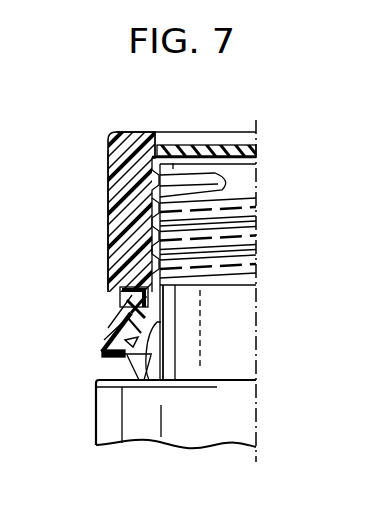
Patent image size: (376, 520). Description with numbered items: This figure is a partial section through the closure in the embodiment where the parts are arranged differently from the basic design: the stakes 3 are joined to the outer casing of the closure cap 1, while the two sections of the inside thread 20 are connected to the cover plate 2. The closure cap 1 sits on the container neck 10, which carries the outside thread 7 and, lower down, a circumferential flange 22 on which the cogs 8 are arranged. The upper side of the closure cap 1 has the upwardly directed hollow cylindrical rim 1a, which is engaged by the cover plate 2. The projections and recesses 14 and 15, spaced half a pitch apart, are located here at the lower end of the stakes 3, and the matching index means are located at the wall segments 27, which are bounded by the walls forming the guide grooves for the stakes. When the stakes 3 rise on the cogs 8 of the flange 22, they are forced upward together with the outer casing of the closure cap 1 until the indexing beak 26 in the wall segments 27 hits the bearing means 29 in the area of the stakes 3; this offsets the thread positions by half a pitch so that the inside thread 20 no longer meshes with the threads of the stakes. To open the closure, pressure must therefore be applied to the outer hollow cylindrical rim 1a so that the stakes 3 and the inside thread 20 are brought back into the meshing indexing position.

The closure cap 1 is at (108, 143).
The hollow cylindrical rim 1a is at (140, 142).
The cover plate 2 is at (228, 144).
The stakes 3 is at (125, 229).
The outside thread 7 is at (245, 230).
The cogs 8 is at (112, 372).
The container neck 10 is at (237, 338).
The projection or recess 14 is at (125, 312).
The projection or recess 15 is at (142, 381).
The inside thread 20 is at (107, 197).
The circumferential flange 22 is at (107, 401).
The indexing beak 26 is at (120, 288).
The wall segments 27 is at (152, 314).
The bearing means 29 is at (121, 307).